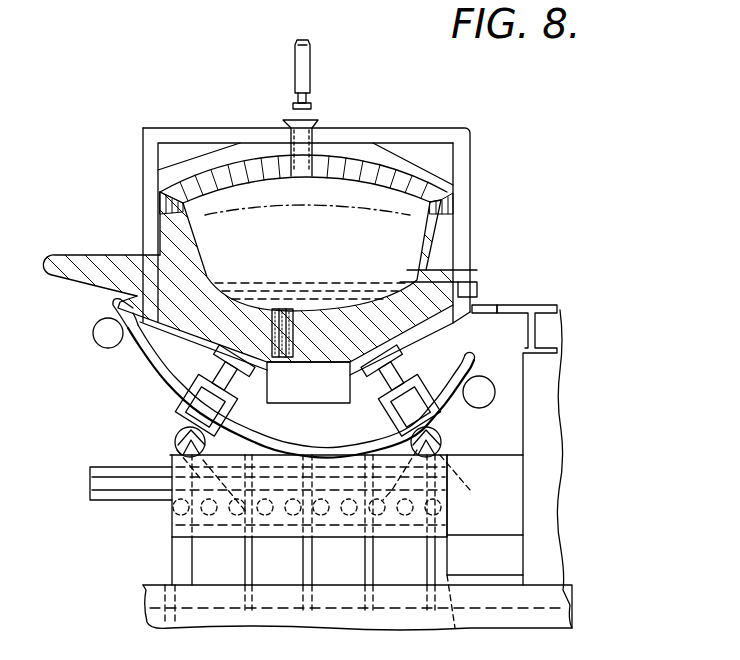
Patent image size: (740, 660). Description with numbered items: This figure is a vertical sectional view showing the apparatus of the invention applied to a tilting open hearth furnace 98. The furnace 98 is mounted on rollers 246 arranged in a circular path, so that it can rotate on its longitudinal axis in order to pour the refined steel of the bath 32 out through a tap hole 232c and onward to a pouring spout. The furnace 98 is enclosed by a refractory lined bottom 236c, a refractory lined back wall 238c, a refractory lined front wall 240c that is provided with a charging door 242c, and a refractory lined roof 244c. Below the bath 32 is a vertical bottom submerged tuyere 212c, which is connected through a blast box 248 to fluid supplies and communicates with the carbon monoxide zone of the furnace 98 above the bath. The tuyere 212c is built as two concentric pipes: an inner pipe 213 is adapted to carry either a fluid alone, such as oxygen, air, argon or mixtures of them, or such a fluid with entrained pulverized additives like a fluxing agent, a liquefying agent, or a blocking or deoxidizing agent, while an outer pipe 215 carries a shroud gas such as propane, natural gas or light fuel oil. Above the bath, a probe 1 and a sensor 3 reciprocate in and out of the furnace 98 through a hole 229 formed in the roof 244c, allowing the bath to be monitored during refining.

The probe 1 is at (292, 62).
The sensor 3 is at (292, 104).
The hole 229 is at (308, 126).
The refractory lined roof 244c is at (373, 157).
The tilting open hearth furnace 98 is at (478, 170).
The refractory lined back wall 238c is at (165, 222).
The refractory lined front wall 240c is at (448, 205).
The charging door 242c is at (472, 243).
The bath 32 is at (478, 270).
The tap hole 232c is at (268, 255).
The outer pipe 215 is at (291, 308).
The refractory lined bottom 236c is at (413, 332).
The inner pipe 213 is at (308, 382).
The rollers 246 is at (112, 349).
The blast box 248 is at (312, 397).
The vertical bottom submerged tuyere 212c is at (300, 350).